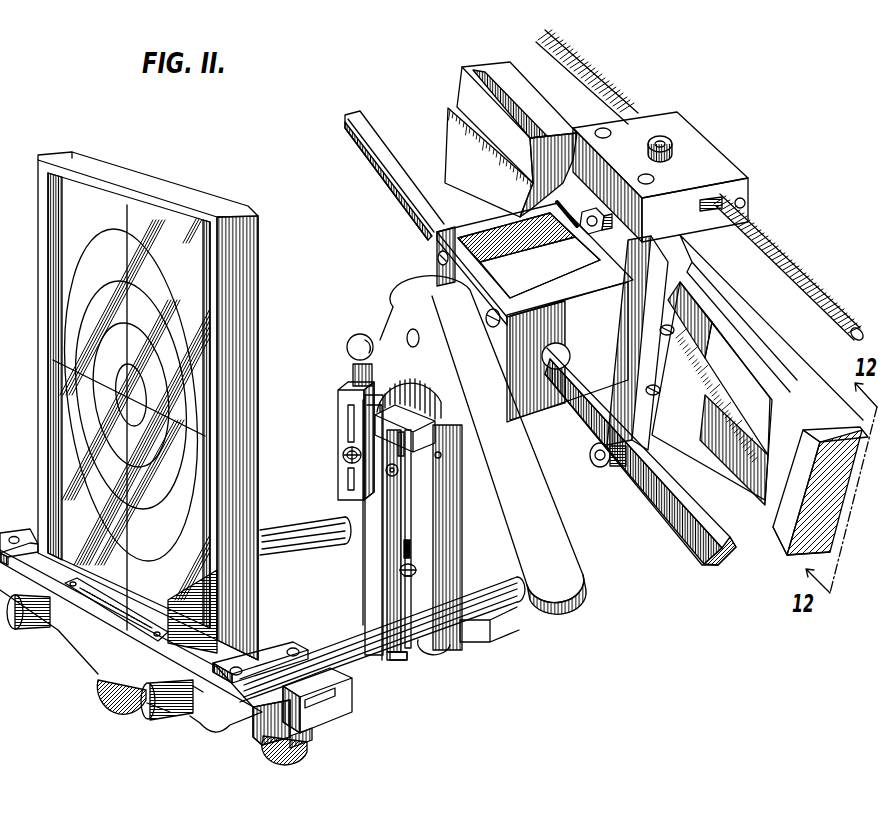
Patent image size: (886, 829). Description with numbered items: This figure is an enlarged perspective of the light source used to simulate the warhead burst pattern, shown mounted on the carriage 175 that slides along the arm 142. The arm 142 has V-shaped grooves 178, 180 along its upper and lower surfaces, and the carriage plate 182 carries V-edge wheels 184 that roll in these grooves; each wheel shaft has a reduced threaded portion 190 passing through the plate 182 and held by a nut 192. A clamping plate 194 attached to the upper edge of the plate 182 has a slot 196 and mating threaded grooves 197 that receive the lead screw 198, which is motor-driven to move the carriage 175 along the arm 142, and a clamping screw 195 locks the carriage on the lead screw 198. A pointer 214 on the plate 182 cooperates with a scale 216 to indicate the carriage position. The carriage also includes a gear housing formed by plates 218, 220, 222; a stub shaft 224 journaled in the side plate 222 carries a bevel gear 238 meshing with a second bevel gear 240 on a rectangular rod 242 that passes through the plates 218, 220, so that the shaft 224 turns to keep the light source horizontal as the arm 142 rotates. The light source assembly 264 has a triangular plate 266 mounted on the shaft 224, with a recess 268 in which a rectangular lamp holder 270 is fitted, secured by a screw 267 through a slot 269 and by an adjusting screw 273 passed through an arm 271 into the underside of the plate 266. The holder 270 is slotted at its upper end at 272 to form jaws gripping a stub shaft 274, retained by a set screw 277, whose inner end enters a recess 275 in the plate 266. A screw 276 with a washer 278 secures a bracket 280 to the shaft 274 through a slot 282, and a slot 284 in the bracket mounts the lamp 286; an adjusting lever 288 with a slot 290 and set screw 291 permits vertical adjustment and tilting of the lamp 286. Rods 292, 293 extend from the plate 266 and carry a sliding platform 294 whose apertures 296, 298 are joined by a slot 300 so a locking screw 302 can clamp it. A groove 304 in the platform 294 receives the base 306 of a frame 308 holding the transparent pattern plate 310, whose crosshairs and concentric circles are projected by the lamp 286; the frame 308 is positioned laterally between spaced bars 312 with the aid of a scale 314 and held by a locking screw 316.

The arm 142 is at (772, 338).
The carriage 175 is at (580, 408).
The V-shaped groove 178 is at (800, 430).
The V-shaped groove 180 is at (788, 556).
The plate 182 is at (558, 193).
The V-edge wheels 184 is at (668, 445).
The reduced threaded portion 190 is at (590, 236).
The nut 192 is at (610, 232).
The clamping plate 194 is at (702, 173).
The clamping screw 195 is at (650, 148).
The slot 196 is at (745, 200).
The threaded grooves 197 is at (702, 200).
The lead screw 198 is at (778, 228).
The pointer 214 is at (732, 351).
The scale 216 is at (728, 458).
The plate 218 is at (592, 329).
The plate 220 is at (475, 222).
The side plate 222 is at (436, 262).
The stub shaft 224 is at (414, 327).
The bevel gear 238 is at (562, 230).
The second bevel gear 240 is at (540, 260).
The rod 242 is at (352, 128).
The light source assembly 264 is at (422, 652).
The triangular plate 266 is at (583, 576).
The screw 267 is at (418, 572).
The recess 268 is at (446, 492).
The slot 269 is at (412, 552).
The lamp holder 270 is at (428, 526).
The arm 271 is at (476, 644).
The slot 272 is at (405, 418).
The adjusting screw 273 is at (436, 650).
The stub shaft 274 is at (401, 452).
The recess 275 is at (438, 400).
The screw 276 is at (346, 460).
The set screw 277 is at (440, 456).
The washer 278 is at (343, 452).
The bracket 280 is at (337, 398).
The slot 282 is at (347, 425).
The slot 284 is at (352, 372).
The lamp 286 is at (348, 340).
The adjusting lever 288 is at (362, 578).
The slot 290 is at (371, 525).
The set screw 291 is at (396, 474).
The rod 292 is at (285, 528).
The rod 293 is at (340, 636).
The platform 294 is at (348, 722).
The aperture 296 is at (44, 608).
The aperture 298 is at (192, 697).
The slot 300 is at (100, 644).
The locking screw 302 is at (102, 698).
The groove 304 is at (318, 712).
The base 306 is at (304, 744).
The frame 308 is at (262, 270).
The transparent pattern plate 310 is at (196, 272).
The spaced bars 312 is at (32, 550).
The scale 314 is at (118, 606).
The locking screw 316 is at (264, 758).